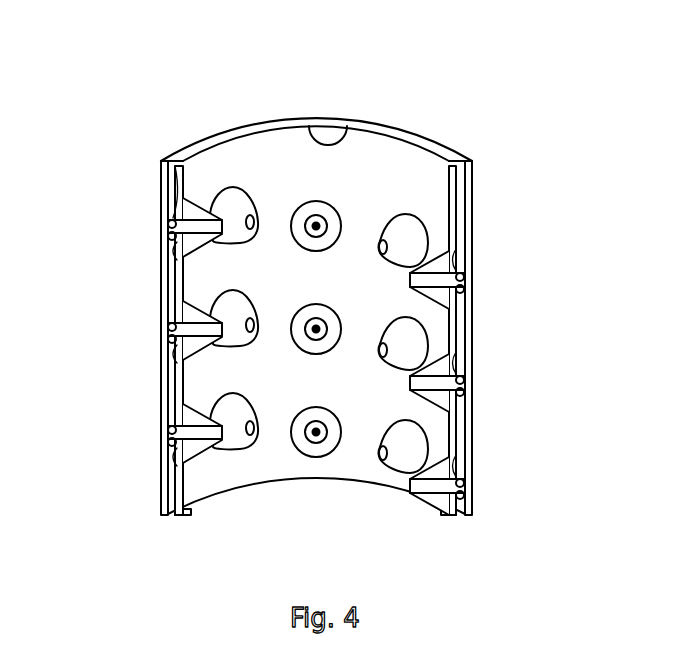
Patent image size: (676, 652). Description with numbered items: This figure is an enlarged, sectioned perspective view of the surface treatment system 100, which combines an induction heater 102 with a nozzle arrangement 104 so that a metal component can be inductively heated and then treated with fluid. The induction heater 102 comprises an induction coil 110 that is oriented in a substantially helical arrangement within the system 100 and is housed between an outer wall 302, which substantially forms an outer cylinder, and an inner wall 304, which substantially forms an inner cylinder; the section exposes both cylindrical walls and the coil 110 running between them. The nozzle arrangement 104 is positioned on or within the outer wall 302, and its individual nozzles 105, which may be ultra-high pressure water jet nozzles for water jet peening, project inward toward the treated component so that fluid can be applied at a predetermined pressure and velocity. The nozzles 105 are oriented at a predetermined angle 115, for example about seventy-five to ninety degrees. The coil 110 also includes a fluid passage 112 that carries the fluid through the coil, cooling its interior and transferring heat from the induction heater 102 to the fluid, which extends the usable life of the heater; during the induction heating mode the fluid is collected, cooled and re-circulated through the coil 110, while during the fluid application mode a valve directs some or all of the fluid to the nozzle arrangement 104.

The system 100 is at (316, 309).
The induction heater 102 is at (254, 273).
The nozzle arrangement 104 is at (349, 464).
The nozzle 105 is at (190, 297).
The induction coil 110 is at (172, 245).
The fluid passage 112 is at (164, 158).
The predetermined angle 115 is at (240, 447).
The outer wall 302 is at (230, 122).
The inner wall 304 is at (349, 140).